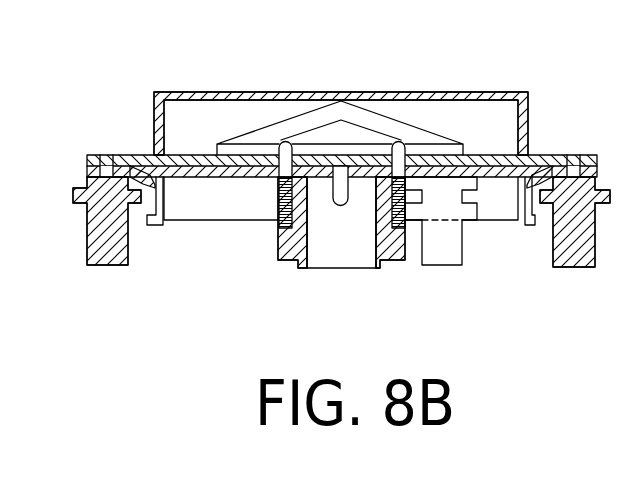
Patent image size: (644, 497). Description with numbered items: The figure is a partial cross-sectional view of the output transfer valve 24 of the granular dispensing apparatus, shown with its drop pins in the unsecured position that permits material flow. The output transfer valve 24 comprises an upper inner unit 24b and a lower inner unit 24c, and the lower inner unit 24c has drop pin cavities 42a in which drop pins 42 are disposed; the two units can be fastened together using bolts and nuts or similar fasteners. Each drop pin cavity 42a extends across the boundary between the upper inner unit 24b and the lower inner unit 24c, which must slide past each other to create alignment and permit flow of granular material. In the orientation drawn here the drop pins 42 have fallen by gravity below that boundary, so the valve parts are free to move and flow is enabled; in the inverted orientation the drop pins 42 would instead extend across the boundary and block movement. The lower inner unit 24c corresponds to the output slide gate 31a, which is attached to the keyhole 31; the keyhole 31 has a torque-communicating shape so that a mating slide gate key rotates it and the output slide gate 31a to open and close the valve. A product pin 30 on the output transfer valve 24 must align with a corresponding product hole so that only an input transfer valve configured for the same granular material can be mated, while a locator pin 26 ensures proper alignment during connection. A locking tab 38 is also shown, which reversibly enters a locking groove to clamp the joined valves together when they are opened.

The output transfer valve 24 is at (342, 119).
The upper inner unit 24b is at (488, 92).
The lower inner unit 24c is at (285, 262).
The locator pin 26 is at (103, 265).
The product pin 30 is at (450, 267).
The keyhole 31 is at (328, 245).
The output slide gate 31a is at (342, 172).
The locking tab 38 is at (159, 227).
The drop pin 42 is at (278, 225).
The drop pin cavity 42a is at (398, 142).